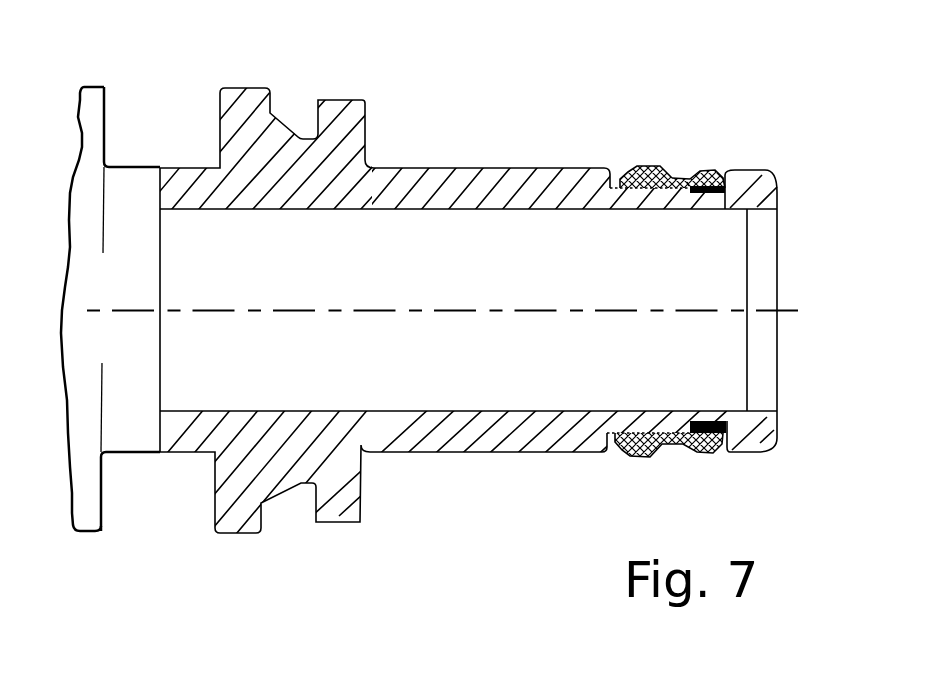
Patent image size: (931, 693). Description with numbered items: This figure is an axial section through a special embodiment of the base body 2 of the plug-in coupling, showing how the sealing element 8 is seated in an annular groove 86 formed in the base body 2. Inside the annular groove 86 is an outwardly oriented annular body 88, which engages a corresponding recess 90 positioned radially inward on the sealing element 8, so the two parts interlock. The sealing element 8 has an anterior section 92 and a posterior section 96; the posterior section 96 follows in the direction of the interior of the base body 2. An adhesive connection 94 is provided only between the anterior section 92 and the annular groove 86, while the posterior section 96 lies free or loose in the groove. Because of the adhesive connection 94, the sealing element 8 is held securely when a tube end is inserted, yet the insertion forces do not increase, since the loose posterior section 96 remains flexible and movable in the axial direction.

The base body 2 is at (233, 467).
The sealing element 8 is at (637, 167).
The annular groove 86 is at (634, 189).
The annular body 88 is at (687, 182).
The recess 90 is at (687, 182).
The anterior section 92 is at (721, 171).
The adhesive connection 94 is at (726, 210).
The posterior section 96 is at (646, 448).